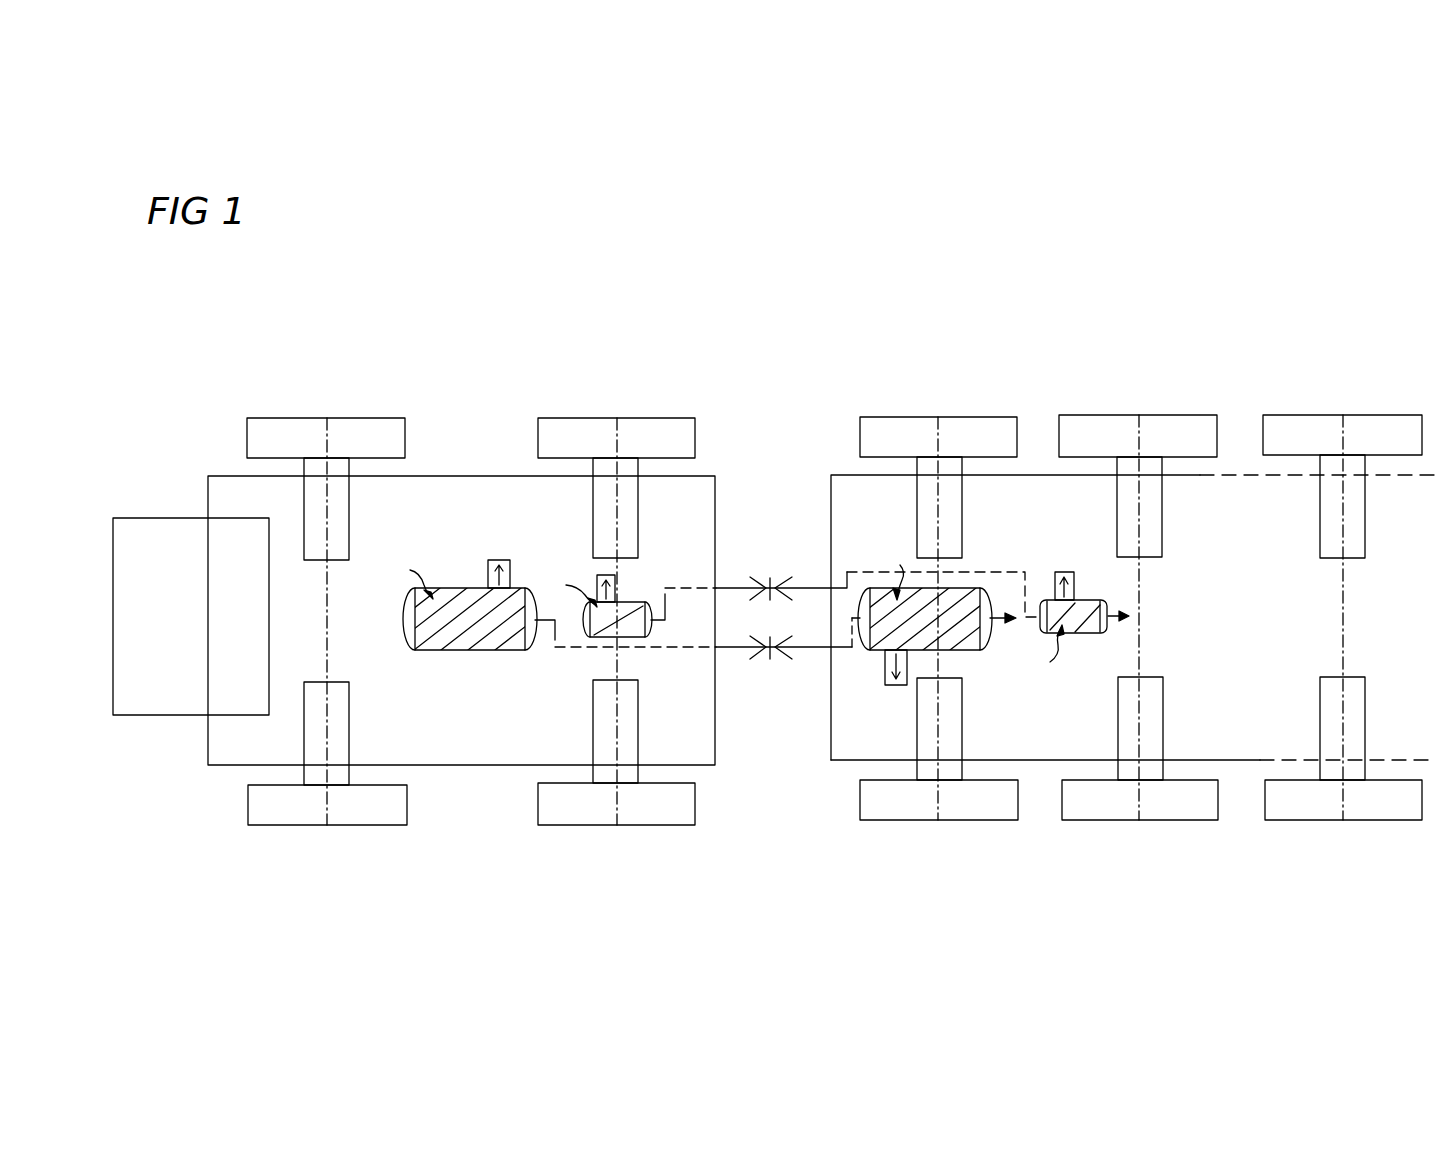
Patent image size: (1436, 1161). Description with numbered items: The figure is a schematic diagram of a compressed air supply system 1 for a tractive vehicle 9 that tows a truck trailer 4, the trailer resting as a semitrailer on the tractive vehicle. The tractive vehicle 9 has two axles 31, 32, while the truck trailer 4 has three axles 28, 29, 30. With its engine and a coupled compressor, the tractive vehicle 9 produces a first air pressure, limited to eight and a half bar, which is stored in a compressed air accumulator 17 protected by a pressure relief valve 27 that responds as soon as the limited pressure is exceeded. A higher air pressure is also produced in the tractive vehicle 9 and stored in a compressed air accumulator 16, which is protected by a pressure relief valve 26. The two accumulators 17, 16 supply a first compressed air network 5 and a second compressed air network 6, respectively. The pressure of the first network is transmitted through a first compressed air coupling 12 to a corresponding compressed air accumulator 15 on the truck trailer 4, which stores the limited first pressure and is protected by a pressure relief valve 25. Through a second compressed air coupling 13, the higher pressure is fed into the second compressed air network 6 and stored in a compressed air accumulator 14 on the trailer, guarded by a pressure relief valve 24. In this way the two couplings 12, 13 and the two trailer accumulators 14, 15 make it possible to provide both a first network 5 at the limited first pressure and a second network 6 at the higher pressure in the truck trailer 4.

The compressed air supply system 1 is at (1345, 335).
The truck trailer 4 is at (1120, 403).
The first compressed air network 5 is at (812, 652).
The second compressed air network 6 is at (817, 588).
The tractive vehicle 9 is at (553, 392).
The first compressed air coupling 12 is at (770, 660).
The second compressed air coupling 13 is at (776, 582).
The compressed air accumulator 14 is at (1089, 628).
The compressed air accumulator 15 is at (960, 646).
The compressed air accumulator 16 is at (600, 633).
The compressed air accumulator 17 is at (464, 650).
The pressure relief valve 24 is at (1077, 582).
The pressure relief valve 25 is at (884, 678).
The pressure relief valve 26 is at (621, 583).
The pressure relief valve 27 is at (486, 583).
The axle 28 is at (935, 706).
The axle 29 is at (1135, 631).
The axle 30 is at (1345, 618).
The axle 31 is at (327, 631).
The axle 32 is at (614, 672).